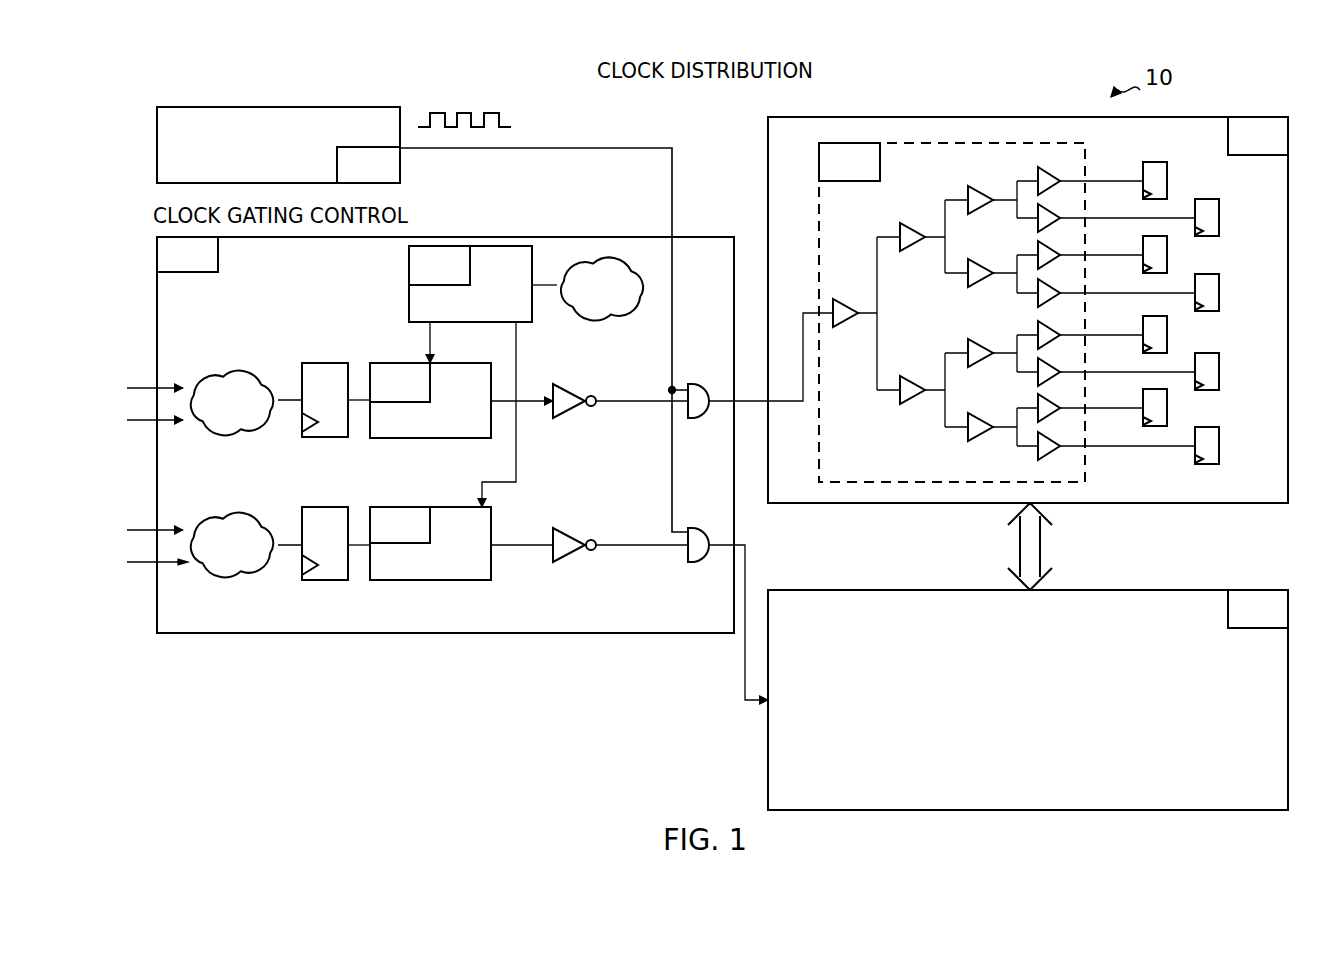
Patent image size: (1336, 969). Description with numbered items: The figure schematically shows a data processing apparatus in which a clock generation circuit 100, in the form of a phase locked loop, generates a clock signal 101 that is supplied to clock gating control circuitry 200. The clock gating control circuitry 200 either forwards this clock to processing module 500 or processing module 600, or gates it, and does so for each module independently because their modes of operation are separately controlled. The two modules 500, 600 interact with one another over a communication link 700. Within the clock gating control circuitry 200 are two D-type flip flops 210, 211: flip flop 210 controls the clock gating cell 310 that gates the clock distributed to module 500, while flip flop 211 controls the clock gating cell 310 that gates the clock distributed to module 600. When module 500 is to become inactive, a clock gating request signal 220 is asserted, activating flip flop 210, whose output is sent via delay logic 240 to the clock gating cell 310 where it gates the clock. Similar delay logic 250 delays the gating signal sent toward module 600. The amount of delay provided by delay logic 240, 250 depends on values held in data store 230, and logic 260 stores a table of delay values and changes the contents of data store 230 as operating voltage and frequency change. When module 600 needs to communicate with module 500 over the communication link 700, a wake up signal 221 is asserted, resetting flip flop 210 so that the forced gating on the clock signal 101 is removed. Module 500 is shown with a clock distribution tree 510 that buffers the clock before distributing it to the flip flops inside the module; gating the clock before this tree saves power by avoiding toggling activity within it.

The clock generation circuit 100 is at (278, 145).
The clock signal 101 is at (676, 218).
The clock gating control circuitry 200 is at (445, 435).
The D-type flip flop 210 is at (336, 363).
The D-type flip flop 211 is at (311, 503).
The clock gating request signal 220 is at (129, 386).
The wake up signal 221 is at (131, 424).
The data store 230 is at (483, 376).
The delay logic 240 is at (518, 415).
The delay logic 250 is at (518, 559).
The logic 260 is at (602, 288).
The clock gating cell 310 is at (693, 385).
The processing module 500 is at (1028, 310).
The clock distribution tree 510 is at (952, 312).
The processing module 600 is at (1028, 700).
The communication link 700 is at (1175, 590).